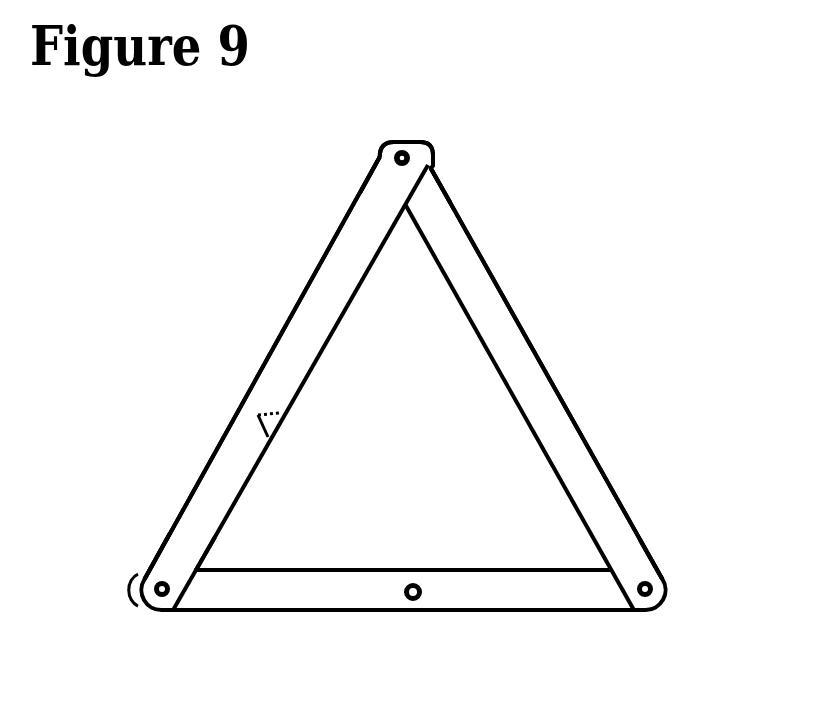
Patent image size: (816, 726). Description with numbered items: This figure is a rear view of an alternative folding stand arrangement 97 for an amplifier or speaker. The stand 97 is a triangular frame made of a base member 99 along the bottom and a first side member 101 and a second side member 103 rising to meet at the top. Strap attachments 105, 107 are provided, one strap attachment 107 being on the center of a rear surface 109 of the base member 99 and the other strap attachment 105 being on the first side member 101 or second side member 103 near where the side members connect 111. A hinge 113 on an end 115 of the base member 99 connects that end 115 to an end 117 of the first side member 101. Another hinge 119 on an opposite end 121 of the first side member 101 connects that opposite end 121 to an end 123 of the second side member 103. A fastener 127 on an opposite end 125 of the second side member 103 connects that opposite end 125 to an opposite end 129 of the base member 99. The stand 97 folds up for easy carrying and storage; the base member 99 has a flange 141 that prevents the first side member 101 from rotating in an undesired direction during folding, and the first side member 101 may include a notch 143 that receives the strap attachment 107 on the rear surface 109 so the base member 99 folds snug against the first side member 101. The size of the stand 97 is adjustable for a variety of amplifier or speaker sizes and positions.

The stand arrangement 97 is at (611, 347).
The base member 99 is at (298, 613).
The first side member 101 is at (328, 247).
The second side member 103 is at (638, 522).
The strap attachment 105 is at (415, 143).
The strap attachment 107 is at (413, 600).
The rear surface 109 is at (242, 595).
The side member connection 111 is at (432, 157).
The hinge 113 is at (157, 612).
The end of base member 115 is at (195, 590).
The end of first side member 117 is at (173, 563).
The hinge 119 is at (380, 158).
The opposite end of first side member 121 is at (388, 181).
The end of second side member 123 is at (423, 192).
The opposite end of second side member 125 is at (638, 558).
The fastener 127 is at (672, 595).
The opposite end of base member 129 is at (603, 595).
The flange 141 is at (130, 592).
The notch 143 is at (258, 418).